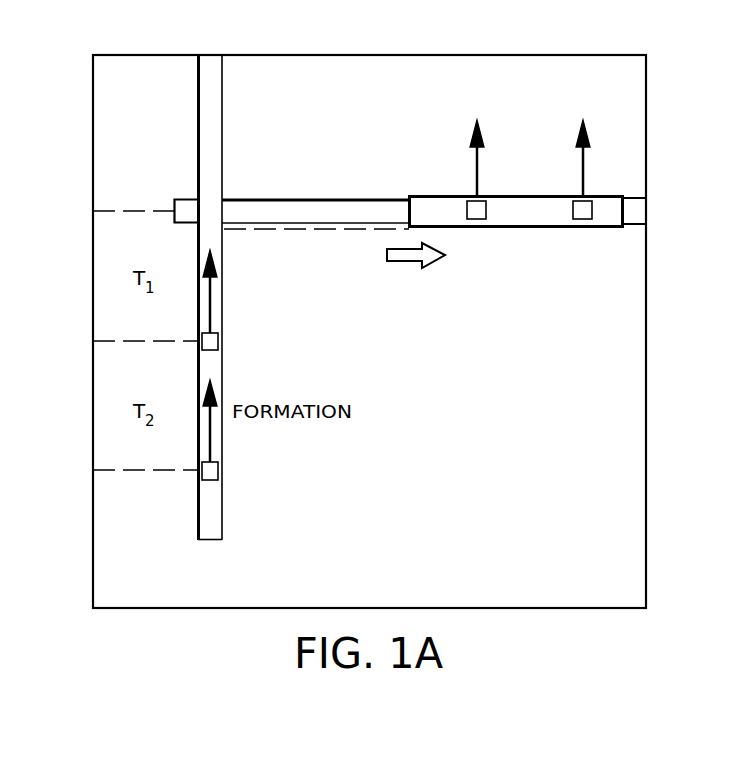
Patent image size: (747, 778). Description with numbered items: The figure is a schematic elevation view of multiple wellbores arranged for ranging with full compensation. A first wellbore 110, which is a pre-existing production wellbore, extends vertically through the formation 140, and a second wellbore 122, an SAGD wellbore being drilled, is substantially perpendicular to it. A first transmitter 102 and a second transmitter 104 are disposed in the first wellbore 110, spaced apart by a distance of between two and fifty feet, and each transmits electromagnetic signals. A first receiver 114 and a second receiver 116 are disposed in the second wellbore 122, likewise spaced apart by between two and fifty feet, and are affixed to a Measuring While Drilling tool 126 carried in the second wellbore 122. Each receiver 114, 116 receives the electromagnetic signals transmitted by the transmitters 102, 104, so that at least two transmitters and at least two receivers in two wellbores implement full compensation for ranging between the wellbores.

The first transmitter 102 is at (218, 350).
The second transmitter 104 is at (218, 480).
The first wellbore 110 is at (210, 540).
The first receiver 114 is at (481, 227).
The second receiver 116 is at (588, 227).
The second wellbore 122 is at (647, 212).
The Measuring While Drilling tool 126 is at (534, 230).
The formation 140 is at (521, 468).